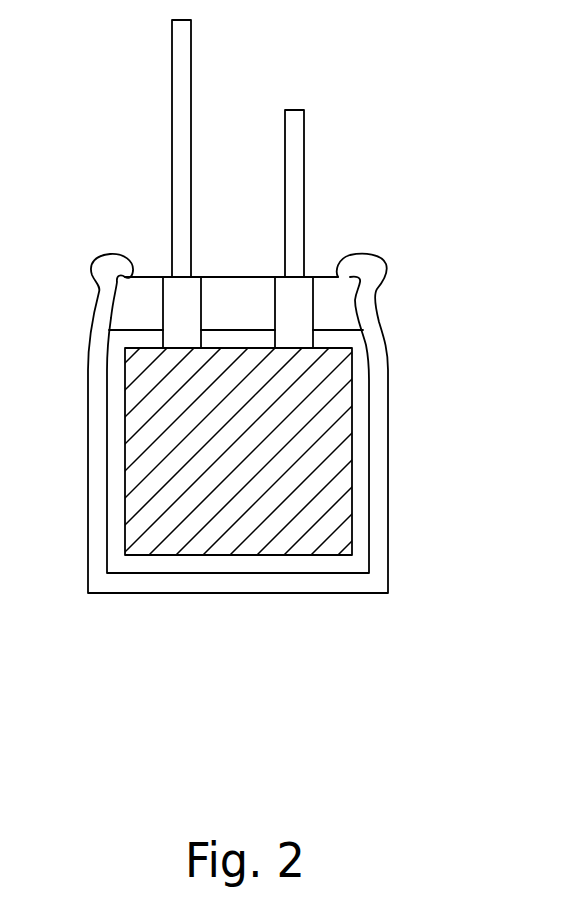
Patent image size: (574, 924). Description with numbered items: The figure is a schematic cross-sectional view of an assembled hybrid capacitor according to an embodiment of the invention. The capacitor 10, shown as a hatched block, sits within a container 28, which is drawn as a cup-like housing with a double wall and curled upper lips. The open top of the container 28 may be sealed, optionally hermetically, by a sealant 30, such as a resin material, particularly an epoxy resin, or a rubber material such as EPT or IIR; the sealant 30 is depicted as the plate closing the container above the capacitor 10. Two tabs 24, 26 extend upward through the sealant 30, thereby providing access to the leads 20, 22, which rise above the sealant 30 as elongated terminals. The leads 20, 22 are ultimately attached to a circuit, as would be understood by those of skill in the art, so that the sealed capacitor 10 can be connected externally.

The capacitor 10 is at (330, 493).
The lead 20 is at (182, 62).
The lead 22 is at (293, 128).
The tab 24 is at (183, 312).
The tab 26 is at (298, 310).
The container 28 is at (380, 547).
The sealant 30 is at (225, 297).